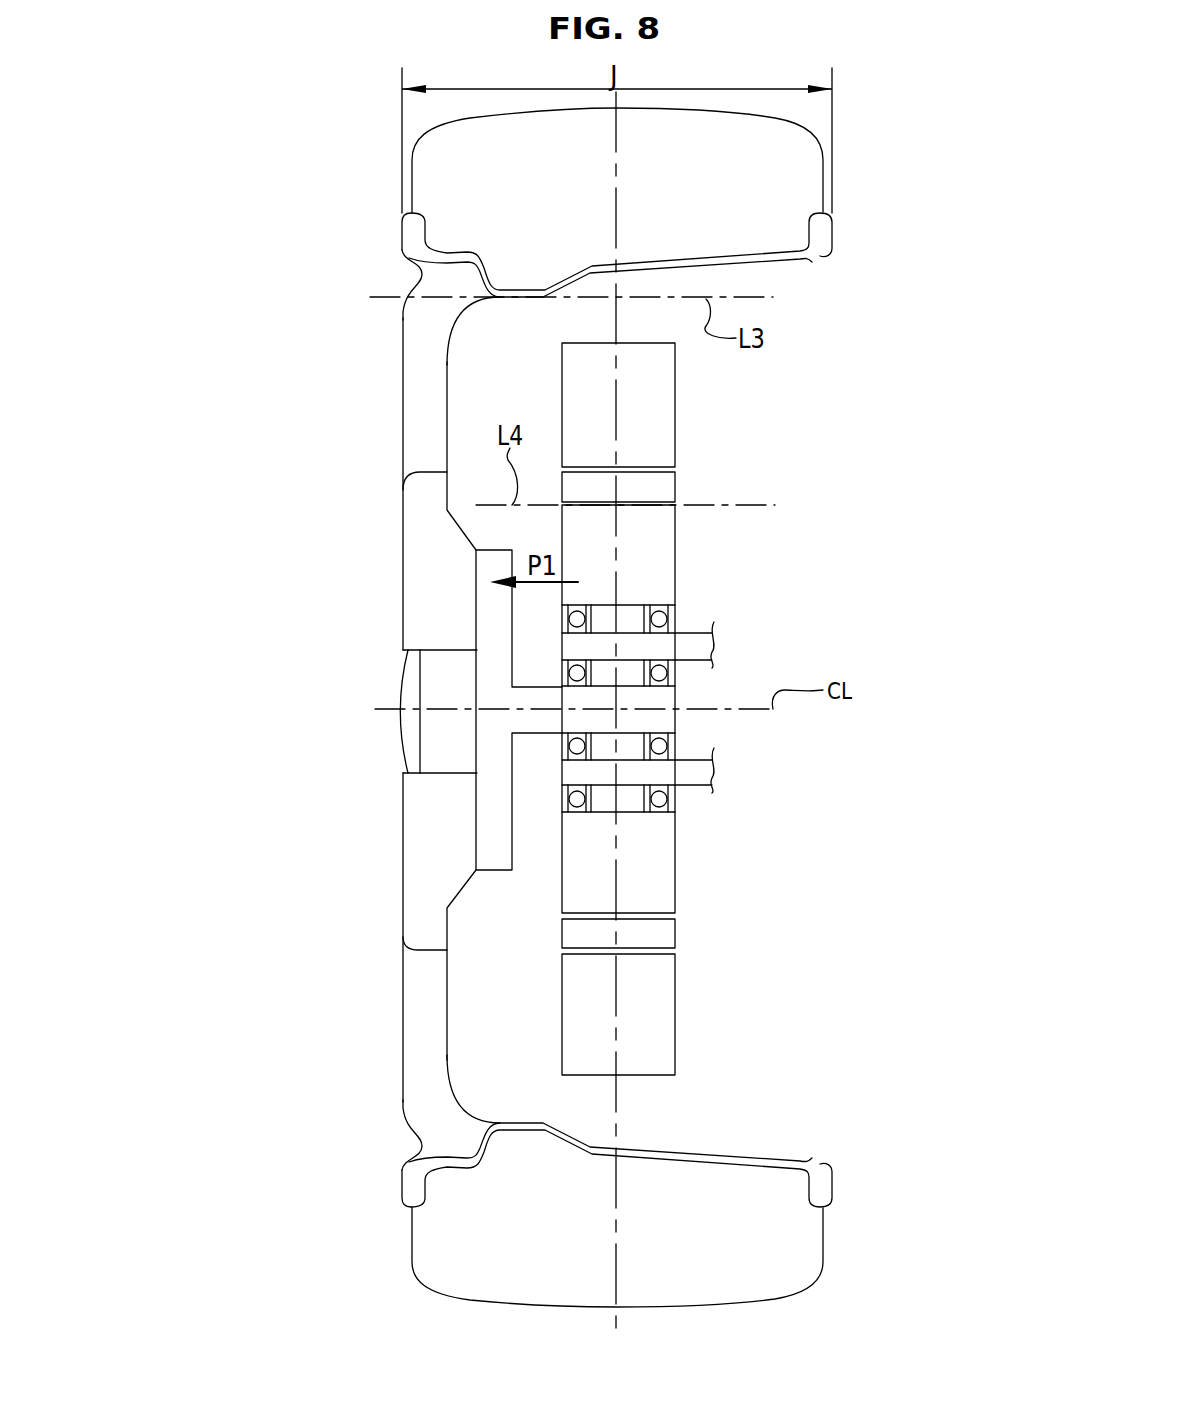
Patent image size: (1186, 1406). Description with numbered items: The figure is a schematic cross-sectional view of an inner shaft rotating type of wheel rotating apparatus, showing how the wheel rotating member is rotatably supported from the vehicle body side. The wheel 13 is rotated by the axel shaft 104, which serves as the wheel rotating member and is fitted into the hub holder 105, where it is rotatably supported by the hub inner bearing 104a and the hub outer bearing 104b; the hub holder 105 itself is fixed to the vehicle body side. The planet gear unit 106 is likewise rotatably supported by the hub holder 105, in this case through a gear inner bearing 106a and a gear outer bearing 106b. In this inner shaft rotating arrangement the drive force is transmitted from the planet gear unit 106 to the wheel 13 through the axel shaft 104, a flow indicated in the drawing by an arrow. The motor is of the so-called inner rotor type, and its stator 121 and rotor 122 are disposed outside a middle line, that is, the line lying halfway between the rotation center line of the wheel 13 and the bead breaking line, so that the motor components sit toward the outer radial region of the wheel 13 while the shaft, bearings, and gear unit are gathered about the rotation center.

The wheel 13 is at (403, 855).
The stator 121 is at (675, 423).
The rotor 122 is at (675, 487).
The planet gear unit 106 is at (675, 545).
The gear inner bearing 106a is at (659, 619).
The gear outer bearing 106b is at (577, 619).
The hub inner bearing 104a is at (659, 672).
The hub outer bearing 104b is at (577, 672).
The axel shaft 104 is at (660, 720).
The hub holder 105 is at (690, 777).